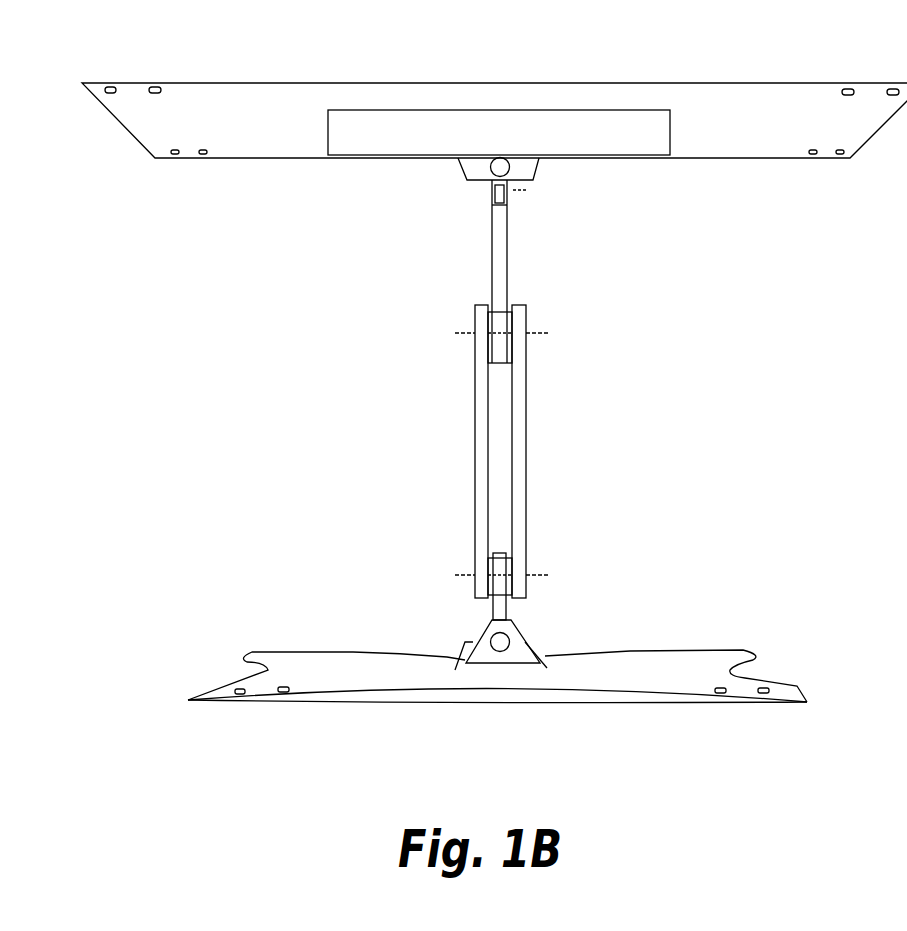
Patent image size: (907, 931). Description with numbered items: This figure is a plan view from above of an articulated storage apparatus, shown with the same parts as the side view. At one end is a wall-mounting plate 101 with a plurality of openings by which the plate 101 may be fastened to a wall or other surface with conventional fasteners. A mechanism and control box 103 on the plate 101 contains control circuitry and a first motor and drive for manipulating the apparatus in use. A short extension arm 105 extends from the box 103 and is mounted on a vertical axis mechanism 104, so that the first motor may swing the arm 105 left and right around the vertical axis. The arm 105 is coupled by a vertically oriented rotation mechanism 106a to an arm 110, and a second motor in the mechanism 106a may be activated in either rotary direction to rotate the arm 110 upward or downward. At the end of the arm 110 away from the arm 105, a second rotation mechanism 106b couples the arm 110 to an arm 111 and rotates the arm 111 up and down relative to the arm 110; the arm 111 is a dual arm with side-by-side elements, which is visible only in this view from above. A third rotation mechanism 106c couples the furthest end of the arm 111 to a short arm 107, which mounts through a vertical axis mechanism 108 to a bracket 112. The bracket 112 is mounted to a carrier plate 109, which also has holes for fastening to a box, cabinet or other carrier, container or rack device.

The wall-mounting plate 101 is at (232, 83).
The mechanism and control box 103 is at (500, 128).
The vertical axis mechanism 104 is at (500, 158).
The short extension arm 105 is at (490, 190).
The vertically oriented rotation mechanism 106a is at (509, 193).
The second rotation mechanism 106b is at (532, 316).
The third rotation mechanism 106c is at (456, 570).
The short arm 107 is at (518, 615).
The vertical axis mechanism 108 is at (524, 638).
The carrier plate 109 is at (355, 667).
The arm 110 is at (481, 431).
The arm 111 is at (480, 467).
The bracket 112 is at (508, 642).